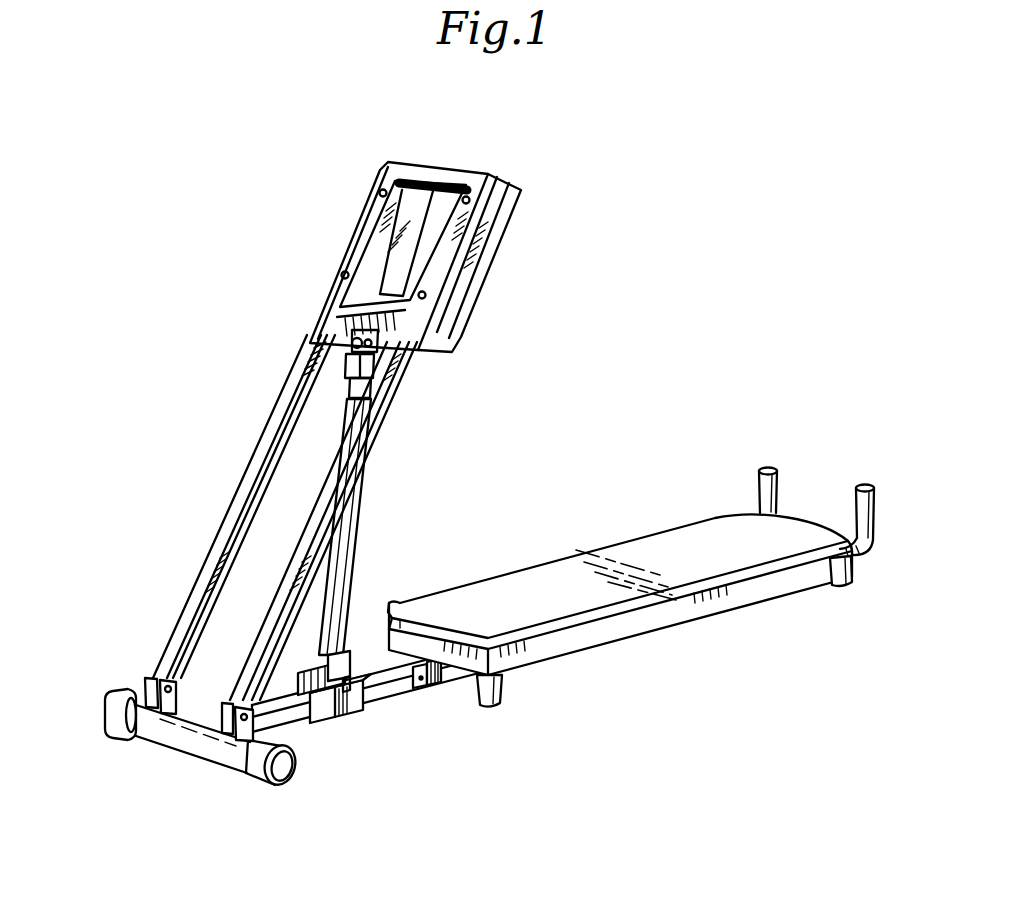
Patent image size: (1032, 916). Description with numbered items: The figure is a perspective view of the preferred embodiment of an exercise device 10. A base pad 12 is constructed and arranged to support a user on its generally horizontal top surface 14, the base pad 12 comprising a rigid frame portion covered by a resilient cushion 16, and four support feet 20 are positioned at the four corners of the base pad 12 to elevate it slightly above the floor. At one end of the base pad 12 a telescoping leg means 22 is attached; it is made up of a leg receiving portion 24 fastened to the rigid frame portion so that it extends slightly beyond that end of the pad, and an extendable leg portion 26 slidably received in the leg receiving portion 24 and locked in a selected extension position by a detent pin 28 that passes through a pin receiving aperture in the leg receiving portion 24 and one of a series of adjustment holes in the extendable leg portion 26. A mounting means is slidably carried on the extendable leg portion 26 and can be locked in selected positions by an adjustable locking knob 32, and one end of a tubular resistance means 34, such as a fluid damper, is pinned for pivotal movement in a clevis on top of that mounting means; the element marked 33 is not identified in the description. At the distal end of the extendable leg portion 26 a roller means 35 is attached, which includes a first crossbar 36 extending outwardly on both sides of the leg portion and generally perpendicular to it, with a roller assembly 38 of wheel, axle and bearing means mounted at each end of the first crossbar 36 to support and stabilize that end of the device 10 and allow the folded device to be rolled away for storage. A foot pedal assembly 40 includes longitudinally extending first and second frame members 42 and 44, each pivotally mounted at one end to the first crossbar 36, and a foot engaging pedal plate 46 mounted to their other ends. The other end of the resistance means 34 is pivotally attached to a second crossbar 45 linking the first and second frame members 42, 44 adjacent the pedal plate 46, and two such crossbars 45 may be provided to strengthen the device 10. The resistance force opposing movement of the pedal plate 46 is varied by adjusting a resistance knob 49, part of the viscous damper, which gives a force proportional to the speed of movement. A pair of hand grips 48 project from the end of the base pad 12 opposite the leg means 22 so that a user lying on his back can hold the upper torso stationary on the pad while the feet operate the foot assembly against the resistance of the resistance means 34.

The exercise device 10 is at (502, 483).
The base pad 12 is at (690, 608).
The top surface 14 is at (543, 560).
The resilient cushion 16 is at (803, 557).
The support feet 20 is at (499, 672).
The leg means 22 is at (443, 669).
The leg receiving portion 24 is at (343, 709).
The extendable leg portion 26 is at (288, 722).
The detent pin 28 is at (423, 689).
The adjustable locking knob 32 is at (316, 672).
The pin 33 is at (346, 682).
The tubular resistance means 34 is at (363, 490).
The roller means 35 is at (118, 697).
The first crossbar 36 is at (195, 727).
The roller assembly 38 is at (248, 775).
The foot pedal assembly 40 is at (490, 173).
The first frame member 42 is at (273, 428).
The second frame member 44 is at (381, 432).
The second crossbar 45 is at (441, 173).
The foot engaging pedal plate 46 is at (486, 265).
The hand grips 48 is at (763, 468).
The resistance knob 49 is at (376, 368).